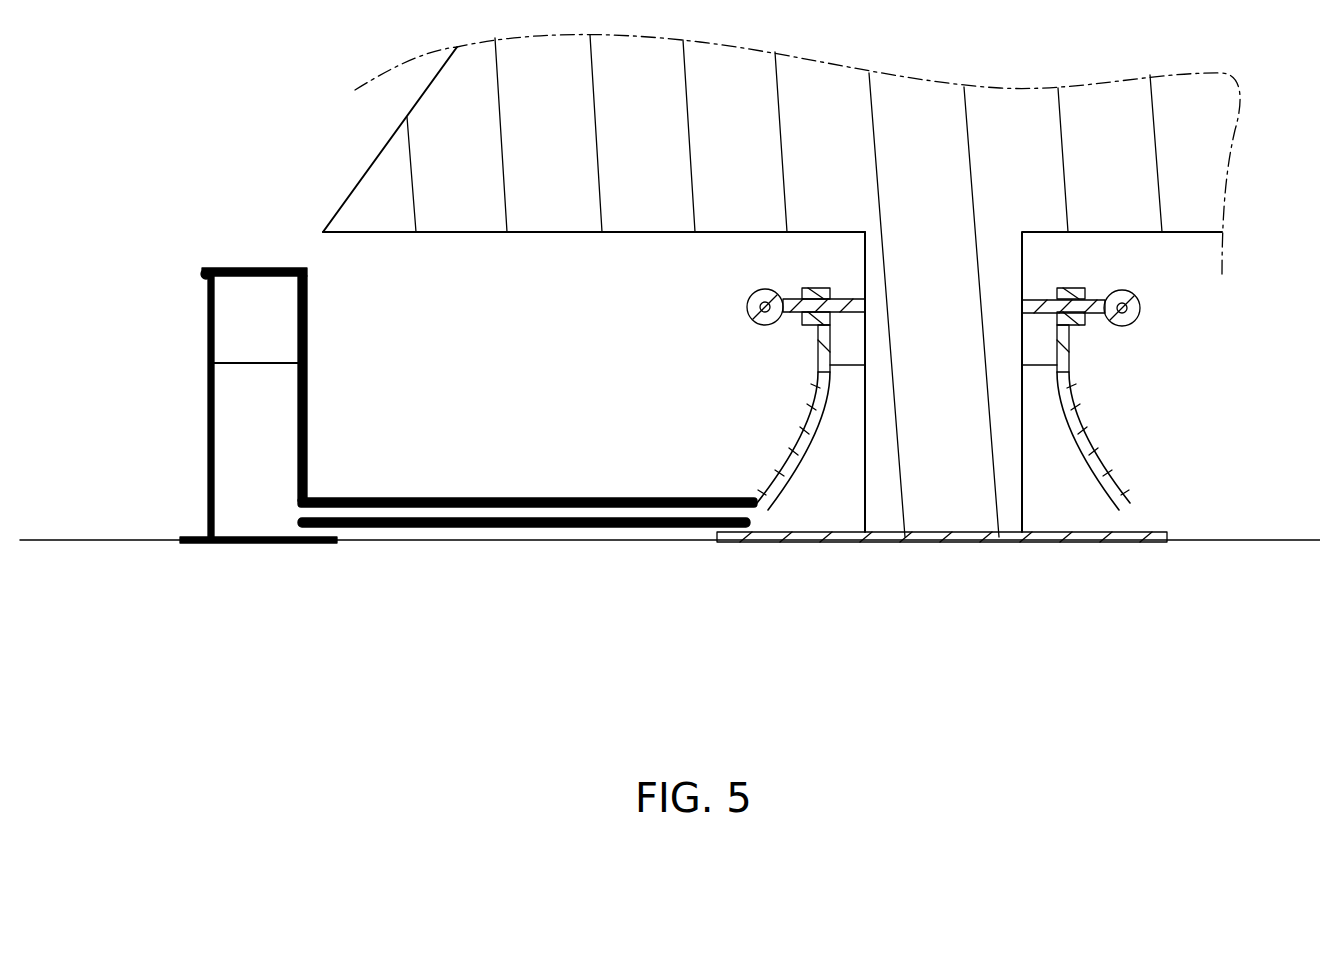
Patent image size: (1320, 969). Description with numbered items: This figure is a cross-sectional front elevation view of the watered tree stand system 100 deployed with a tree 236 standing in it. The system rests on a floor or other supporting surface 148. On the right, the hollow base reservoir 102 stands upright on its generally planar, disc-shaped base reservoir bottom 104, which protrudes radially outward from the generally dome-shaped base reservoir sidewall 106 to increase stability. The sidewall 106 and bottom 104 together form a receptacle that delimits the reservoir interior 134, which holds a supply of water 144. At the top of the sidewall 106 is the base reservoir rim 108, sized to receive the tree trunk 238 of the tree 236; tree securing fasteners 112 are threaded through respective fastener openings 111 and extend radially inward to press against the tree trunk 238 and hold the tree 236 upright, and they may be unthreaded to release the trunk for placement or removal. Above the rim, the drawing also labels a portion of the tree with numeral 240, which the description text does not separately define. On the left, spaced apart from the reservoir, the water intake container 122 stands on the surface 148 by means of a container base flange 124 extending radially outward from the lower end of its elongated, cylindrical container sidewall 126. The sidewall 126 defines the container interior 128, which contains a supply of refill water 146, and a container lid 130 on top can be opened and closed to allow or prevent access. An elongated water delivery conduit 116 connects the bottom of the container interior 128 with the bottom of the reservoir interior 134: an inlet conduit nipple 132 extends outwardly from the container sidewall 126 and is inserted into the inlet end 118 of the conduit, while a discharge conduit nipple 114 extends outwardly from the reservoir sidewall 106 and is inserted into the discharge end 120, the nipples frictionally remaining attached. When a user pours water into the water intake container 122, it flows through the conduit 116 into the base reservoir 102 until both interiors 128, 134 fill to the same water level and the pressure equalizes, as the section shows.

The watered tree stand system 100 is at (178, 172).
The base reservoir 102 is at (1138, 441).
The base reservoir bottom 104 is at (1068, 543).
The base reservoir sidewall 106 is at (1123, 473).
The base reservoir rim 108 is at (1068, 290).
The fastener openings 111 is at (805, 296).
The tree securing fasteners 112 is at (747, 307).
The discharge conduit nipple 114 is at (755, 498).
The water delivery conduit 116 is at (525, 496).
The inlet end 118 is at (300, 528).
The discharge end 120 is at (762, 534).
The water intake container 122 is at (256, 373).
The container base flange 124 is at (200, 535).
The container sidewall 126 is at (308, 345).
The container interior 128 is at (246, 318).
The container lid 130 is at (250, 268).
The inlet conduit nipple 132 is at (318, 496).
The reservoir interior 134 is at (1060, 405).
The supply of water 144 is at (849, 362).
The supply of refill water 146 is at (262, 362).
The supporting surface 148 is at (70, 538).
The tree 236 is at (378, 132).
The tree trunk 238 is at (880, 262).
The frame flange 240 is at (568, 213).